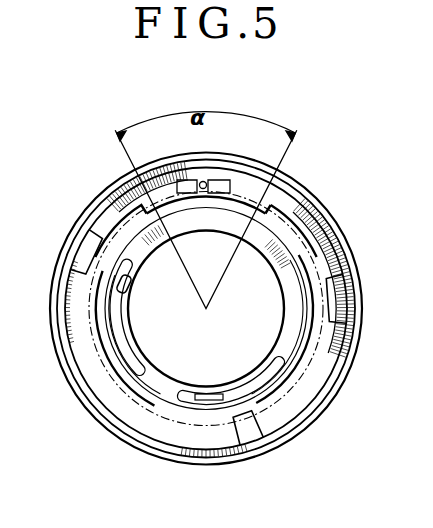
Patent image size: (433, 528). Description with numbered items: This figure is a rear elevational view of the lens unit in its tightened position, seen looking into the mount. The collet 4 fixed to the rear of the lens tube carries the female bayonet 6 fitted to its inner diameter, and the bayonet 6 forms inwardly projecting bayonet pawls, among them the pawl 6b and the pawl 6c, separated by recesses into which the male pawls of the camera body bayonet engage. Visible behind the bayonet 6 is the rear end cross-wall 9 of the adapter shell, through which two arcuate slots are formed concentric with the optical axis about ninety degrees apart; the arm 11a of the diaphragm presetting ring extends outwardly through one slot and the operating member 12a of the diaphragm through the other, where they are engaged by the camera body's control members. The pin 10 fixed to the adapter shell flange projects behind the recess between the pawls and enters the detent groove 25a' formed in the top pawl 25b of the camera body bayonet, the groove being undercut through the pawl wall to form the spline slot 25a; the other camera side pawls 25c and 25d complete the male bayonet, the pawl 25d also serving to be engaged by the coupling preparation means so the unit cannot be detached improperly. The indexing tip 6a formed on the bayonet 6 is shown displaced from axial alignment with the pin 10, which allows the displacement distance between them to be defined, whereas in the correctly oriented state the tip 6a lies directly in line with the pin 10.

The collet 4 is at (358, 300).
The female bayonet 6 is at (334, 268).
The indexing tip 6a is at (103, 240).
The bayonet pawl 6b is at (330, 338).
The projection of ring 6 6c is at (147, 416).
The rear end cross-wall 9 is at (282, 254).
The pin 10 is at (204, 181).
The arm of the diaphragm presetting ring 11a is at (130, 285).
The operating member 12a is at (212, 392).
The spline slot 25a is at (206, 232).
The detent groove 25a' is at (224, 233).
The top pawl of the camera body bayonet 25b is at (298, 385).
The arc portion of ring 25 25c is at (123, 400).
The camera side bayonet pawl 25d is at (157, 195).